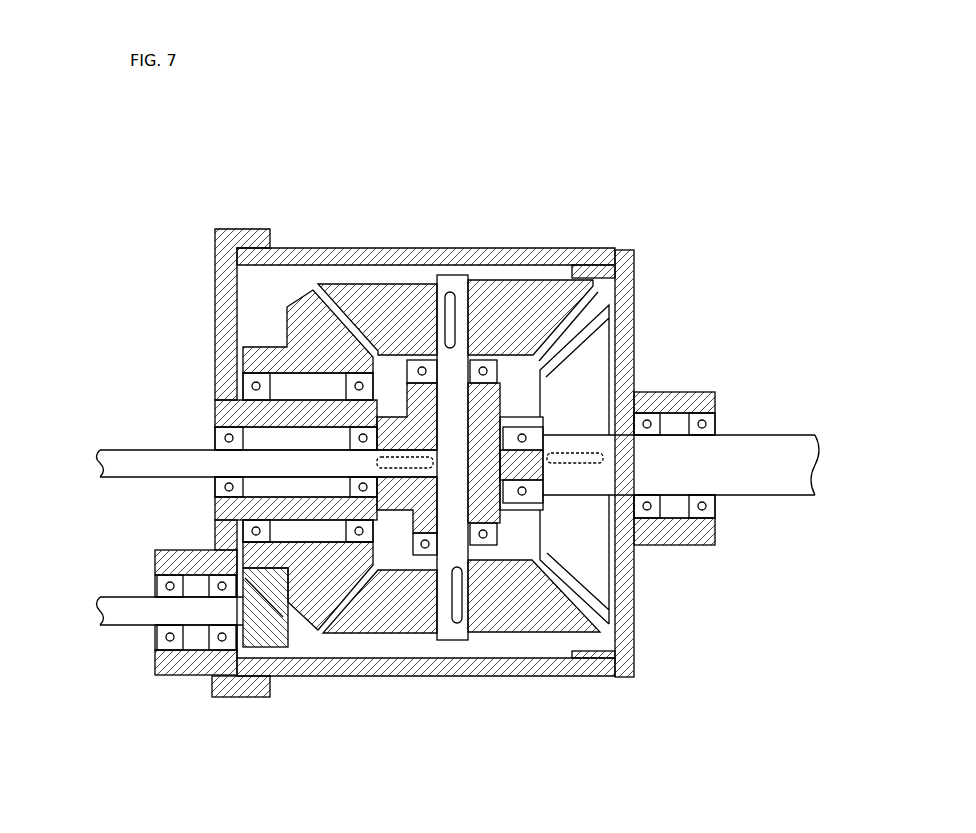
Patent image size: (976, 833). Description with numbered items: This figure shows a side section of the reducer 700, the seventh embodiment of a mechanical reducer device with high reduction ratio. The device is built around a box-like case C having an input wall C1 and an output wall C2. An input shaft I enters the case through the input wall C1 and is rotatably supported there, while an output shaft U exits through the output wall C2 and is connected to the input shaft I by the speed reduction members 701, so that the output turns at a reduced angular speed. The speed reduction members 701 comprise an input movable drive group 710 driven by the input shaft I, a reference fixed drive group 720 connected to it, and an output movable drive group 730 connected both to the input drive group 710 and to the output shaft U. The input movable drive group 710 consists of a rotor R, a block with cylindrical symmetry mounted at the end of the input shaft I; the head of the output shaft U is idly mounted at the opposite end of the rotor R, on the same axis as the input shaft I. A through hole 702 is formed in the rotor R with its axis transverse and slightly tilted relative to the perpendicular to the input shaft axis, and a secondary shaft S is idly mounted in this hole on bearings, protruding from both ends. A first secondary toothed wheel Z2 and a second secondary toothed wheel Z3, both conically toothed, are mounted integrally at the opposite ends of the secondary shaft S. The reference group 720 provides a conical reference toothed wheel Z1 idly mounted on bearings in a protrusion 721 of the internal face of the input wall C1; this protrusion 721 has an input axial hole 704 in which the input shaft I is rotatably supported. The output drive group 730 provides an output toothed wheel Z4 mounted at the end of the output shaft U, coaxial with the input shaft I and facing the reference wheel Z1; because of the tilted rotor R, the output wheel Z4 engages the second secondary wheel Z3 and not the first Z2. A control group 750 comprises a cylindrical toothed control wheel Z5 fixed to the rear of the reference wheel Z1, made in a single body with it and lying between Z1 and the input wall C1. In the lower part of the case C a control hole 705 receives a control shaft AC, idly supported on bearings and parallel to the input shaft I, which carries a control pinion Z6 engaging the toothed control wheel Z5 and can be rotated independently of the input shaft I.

The reducer 700 is at (433, 146).
The control group 750 is at (273, 244).
The input wall C1 is at (249, 250).
The through hole 702 is at (343, 247).
The secondary shaft S is at (445, 281).
The reference toothed wheel Z1 is at (327, 357).
The reference fixed drive group 720 is at (241, 288).
The toothed control wheel Z5 is at (247, 362).
The protrusion 721 is at (213, 394).
The input axial hole 704 is at (213, 427).
The input shaft I is at (172, 457).
The rotor R is at (212, 510).
The control shaft AC is at (133, 612).
The control hole 705 is at (153, 573).
The control pinion Z6 is at (242, 652).
The speed reduction members 701 is at (298, 634).
The input movable drive group 710 is at (402, 545).
The first secondary toothed wheel Z2 is at (524, 312).
The output wall C2 is at (633, 250).
The box-like case C is at (424, 469).
The output movable drive group 730 is at (592, 383).
The output shaft U is at (757, 437).
The output toothed wheel Z4 is at (572, 537).
The second secondary toothed wheel Z3 is at (532, 607).